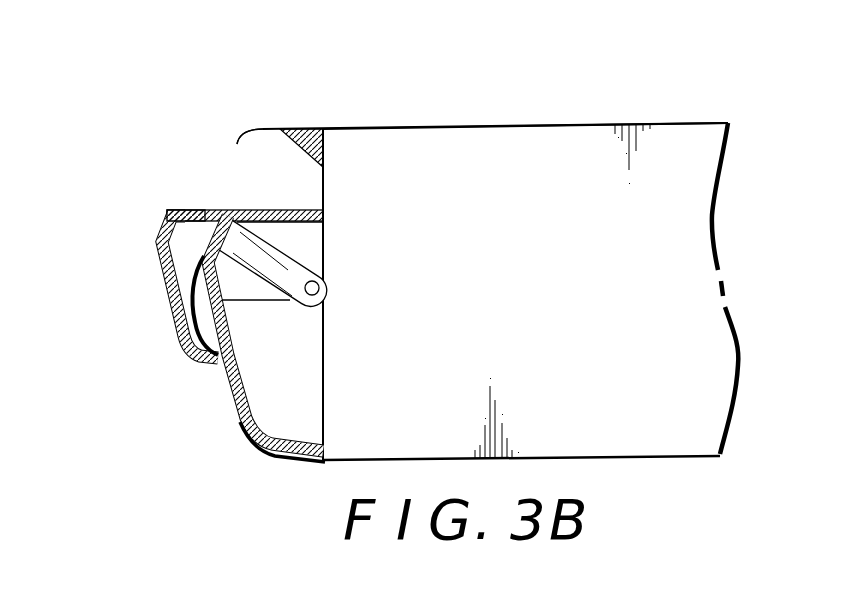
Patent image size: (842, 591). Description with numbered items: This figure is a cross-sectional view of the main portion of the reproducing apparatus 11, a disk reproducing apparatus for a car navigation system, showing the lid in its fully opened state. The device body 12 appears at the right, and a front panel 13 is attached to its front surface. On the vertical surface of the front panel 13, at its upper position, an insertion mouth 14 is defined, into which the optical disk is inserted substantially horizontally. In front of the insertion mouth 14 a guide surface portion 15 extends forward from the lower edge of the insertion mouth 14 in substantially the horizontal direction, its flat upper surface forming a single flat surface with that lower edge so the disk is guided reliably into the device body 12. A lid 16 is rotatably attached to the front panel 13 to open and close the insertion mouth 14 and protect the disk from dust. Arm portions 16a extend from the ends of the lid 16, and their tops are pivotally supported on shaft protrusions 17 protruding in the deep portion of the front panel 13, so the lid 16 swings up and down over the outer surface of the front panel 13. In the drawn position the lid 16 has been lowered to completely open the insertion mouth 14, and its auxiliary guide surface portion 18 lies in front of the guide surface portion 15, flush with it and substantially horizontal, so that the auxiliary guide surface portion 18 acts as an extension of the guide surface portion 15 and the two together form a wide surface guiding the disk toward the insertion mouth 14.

The reproducing apparatus 11 is at (550, 100).
The device body 12 is at (427, 125).
The front panel 13 is at (230, 383).
The insertion mouth 14 is at (300, 184).
The guide surface portion 15 is at (250, 210).
The lid 16 is at (167, 296).
The arm portion 16a is at (270, 262).
The shaft protrusion 17 is at (320, 291).
The auxiliary guide surface portion 18 is at (182, 207).